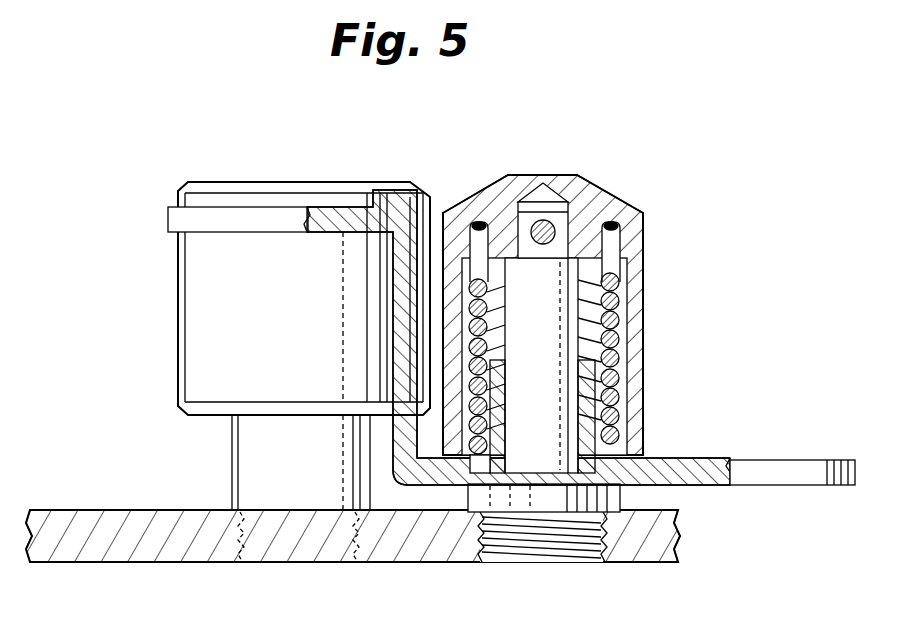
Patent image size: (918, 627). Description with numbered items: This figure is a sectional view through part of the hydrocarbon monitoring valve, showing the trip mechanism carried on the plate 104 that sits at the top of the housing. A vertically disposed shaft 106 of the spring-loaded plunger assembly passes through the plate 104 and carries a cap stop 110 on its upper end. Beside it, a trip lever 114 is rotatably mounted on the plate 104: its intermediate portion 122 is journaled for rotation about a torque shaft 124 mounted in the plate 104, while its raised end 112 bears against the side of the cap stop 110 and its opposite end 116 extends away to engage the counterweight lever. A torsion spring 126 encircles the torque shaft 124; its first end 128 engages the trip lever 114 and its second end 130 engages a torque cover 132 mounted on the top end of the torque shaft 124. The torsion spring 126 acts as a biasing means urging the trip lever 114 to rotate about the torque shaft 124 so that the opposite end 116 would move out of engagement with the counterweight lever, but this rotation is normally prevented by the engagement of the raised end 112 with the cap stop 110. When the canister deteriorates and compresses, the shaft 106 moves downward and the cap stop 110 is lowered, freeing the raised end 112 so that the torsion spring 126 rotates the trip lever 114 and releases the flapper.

The plate 104 is at (203, 563).
The shaft 106 is at (232, 463).
The cap stop 110 is at (178, 340).
The raised end 112 is at (190, 217).
The trip lever 114 is at (760, 452).
The opposite end 116 is at (818, 480).
The intermediate portion 122 is at (628, 488).
The torque shaft 124 is at (556, 379).
The torsion spring 126 is at (598, 302).
The first end 128 is at (462, 478).
The second end 130 is at (614, 247).
The torque cover 132 is at (598, 196).